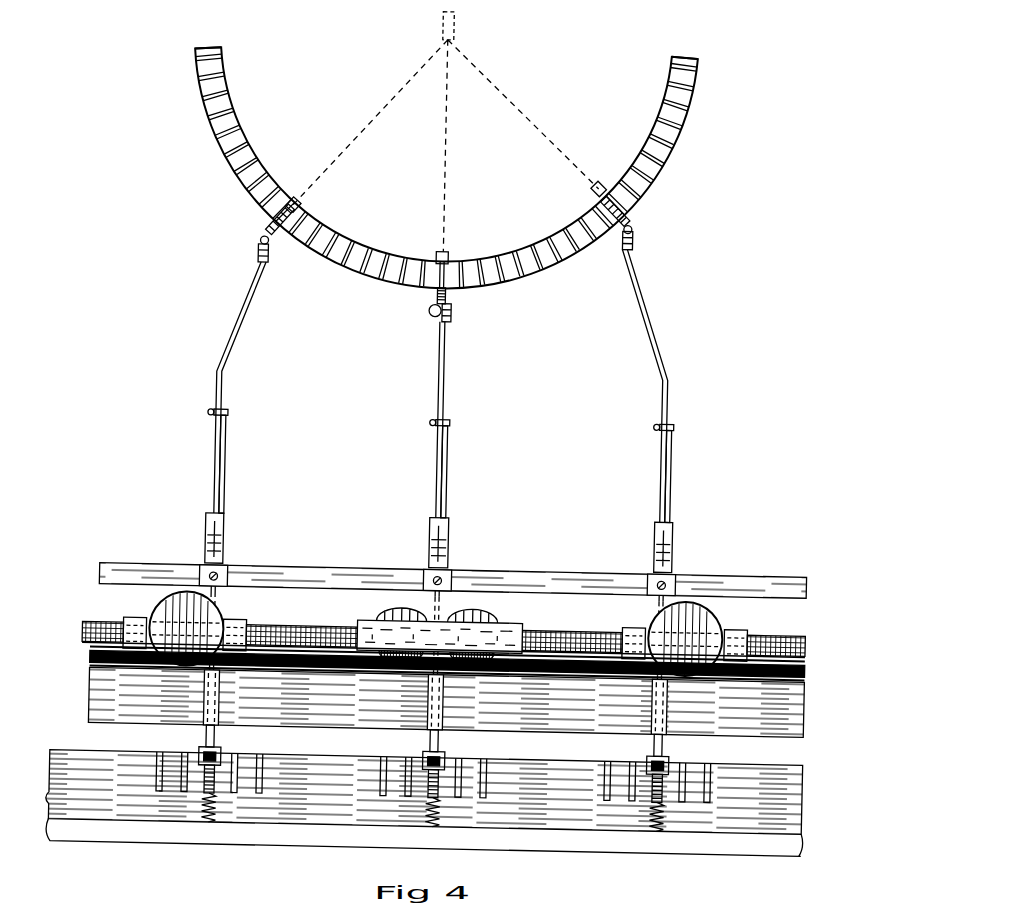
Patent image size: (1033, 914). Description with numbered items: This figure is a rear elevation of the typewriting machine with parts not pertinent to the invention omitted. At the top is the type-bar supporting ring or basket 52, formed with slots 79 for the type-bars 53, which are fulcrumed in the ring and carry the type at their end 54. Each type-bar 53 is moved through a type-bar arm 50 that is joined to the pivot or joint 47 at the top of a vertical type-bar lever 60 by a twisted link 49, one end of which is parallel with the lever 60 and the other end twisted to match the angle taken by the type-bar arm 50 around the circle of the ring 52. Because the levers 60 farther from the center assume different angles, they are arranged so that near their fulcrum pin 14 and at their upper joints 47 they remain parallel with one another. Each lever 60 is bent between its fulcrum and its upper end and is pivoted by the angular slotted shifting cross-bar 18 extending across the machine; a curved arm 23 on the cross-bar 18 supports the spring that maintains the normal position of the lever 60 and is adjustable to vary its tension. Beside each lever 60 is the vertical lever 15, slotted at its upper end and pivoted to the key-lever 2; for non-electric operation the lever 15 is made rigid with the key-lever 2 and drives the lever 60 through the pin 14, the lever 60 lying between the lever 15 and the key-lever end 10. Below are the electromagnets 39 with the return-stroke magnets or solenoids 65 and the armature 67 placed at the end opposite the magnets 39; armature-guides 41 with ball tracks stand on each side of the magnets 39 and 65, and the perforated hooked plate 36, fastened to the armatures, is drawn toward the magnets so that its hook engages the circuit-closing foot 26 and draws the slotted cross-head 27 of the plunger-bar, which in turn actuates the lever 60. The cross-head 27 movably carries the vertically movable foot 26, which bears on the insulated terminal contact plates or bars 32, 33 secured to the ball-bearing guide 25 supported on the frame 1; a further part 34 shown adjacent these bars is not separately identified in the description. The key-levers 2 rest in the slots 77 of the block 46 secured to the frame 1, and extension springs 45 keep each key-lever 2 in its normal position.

The frame 1 is at (424, 835).
The key-lever 2 is at (217, 790).
The key-lever end 10 is at (200, 762).
The pin 14 is at (224, 417).
The vertical lever 15 is at (222, 452).
The shifting cross-bar 18 is at (250, 570).
The curved arm 23 is at (222, 530).
The ball-bearing guide 25 is at (446, 702).
The circuit-closing foot 26 is at (217, 738).
The slotted cross-head 27 is at (207, 730).
The terminal contact plate 32 is at (85, 645).
The terminal contact plate 33 is at (90, 663).
The sheet 34 is at (88, 654).
The hooked plate 36 is at (95, 628).
The magnets 39 is at (170, 605).
The armature-guides 41 is at (133, 624).
The spring 45 is at (205, 805).
The key-lever support block 46 is at (423, 792).
The pivot or joint 47 is at (261, 262).
The twisted link 49 is at (252, 245).
The type-bar arm 50 is at (279, 222).
The type-bar supporting ring 52 is at (183, 58).
The type-bars 53 is at (337, 152).
The type-bar end 54 is at (442, 20).
The type-bar lever 60 is at (226, 348).
The return-stroke magnets 65 is at (402, 611).
The armature 67 is at (522, 626).
The slots 77 is at (246, 758).
The slots 79 is at (223, 127).